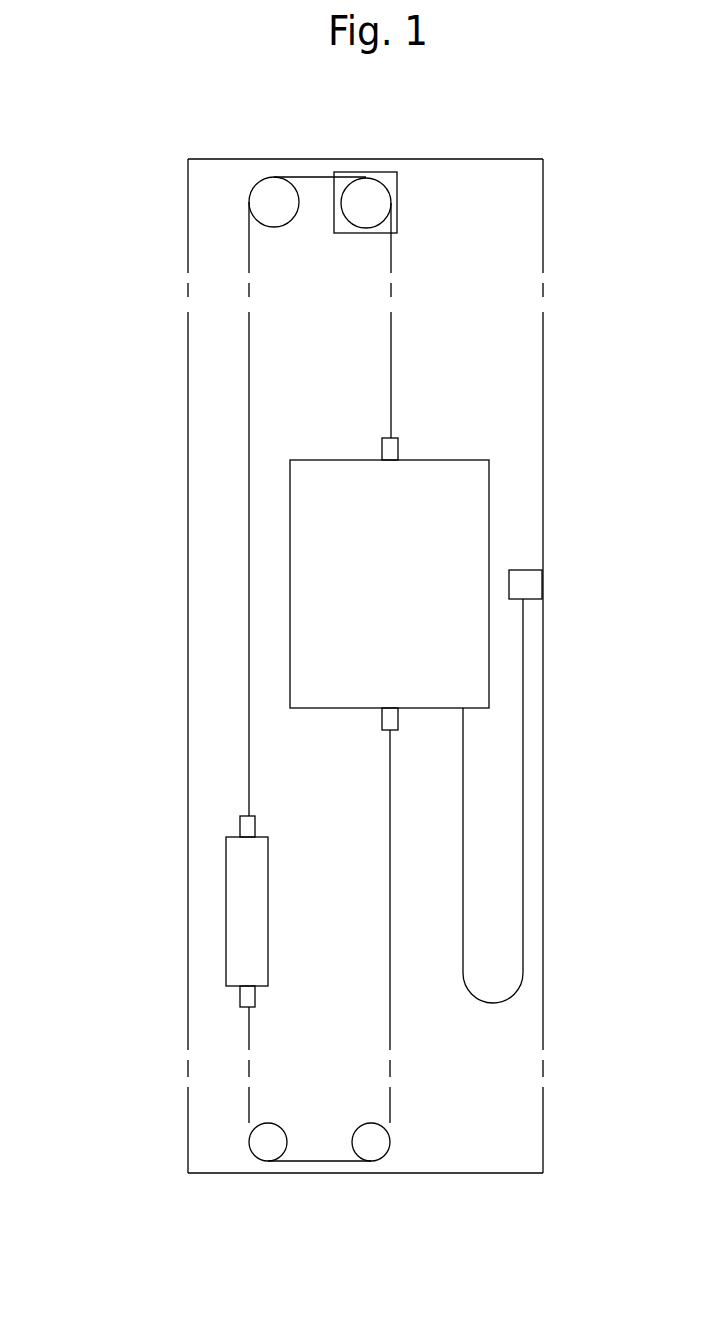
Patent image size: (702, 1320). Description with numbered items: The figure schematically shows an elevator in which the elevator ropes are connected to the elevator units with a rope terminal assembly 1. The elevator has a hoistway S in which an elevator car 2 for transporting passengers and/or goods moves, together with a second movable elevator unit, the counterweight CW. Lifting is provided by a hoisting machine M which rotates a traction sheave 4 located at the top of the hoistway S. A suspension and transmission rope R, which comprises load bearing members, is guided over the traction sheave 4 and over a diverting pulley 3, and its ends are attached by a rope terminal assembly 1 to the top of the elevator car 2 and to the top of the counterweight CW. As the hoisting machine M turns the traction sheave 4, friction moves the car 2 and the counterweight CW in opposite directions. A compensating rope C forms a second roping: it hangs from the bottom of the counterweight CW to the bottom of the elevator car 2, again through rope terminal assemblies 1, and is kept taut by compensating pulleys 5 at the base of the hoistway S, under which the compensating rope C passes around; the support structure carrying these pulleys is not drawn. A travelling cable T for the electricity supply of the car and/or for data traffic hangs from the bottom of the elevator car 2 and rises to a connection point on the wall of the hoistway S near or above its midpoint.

The rope terminal assembly 1 is at (400, 440).
The elevator car 2 is at (377, 609).
The diverting pulley 3 is at (287, 213).
The traction sheave 4 is at (366, 203).
The compensating pulleys 5 is at (368, 1150).
The suspension and transmission rope R is at (248, 417).
The compensating rope C is at (388, 968).
The counterweight CW is at (242, 907).
The hoisting machine M is at (416, 251).
The hoistway S is at (310, 823).
The travelling cable T is at (478, 1003).